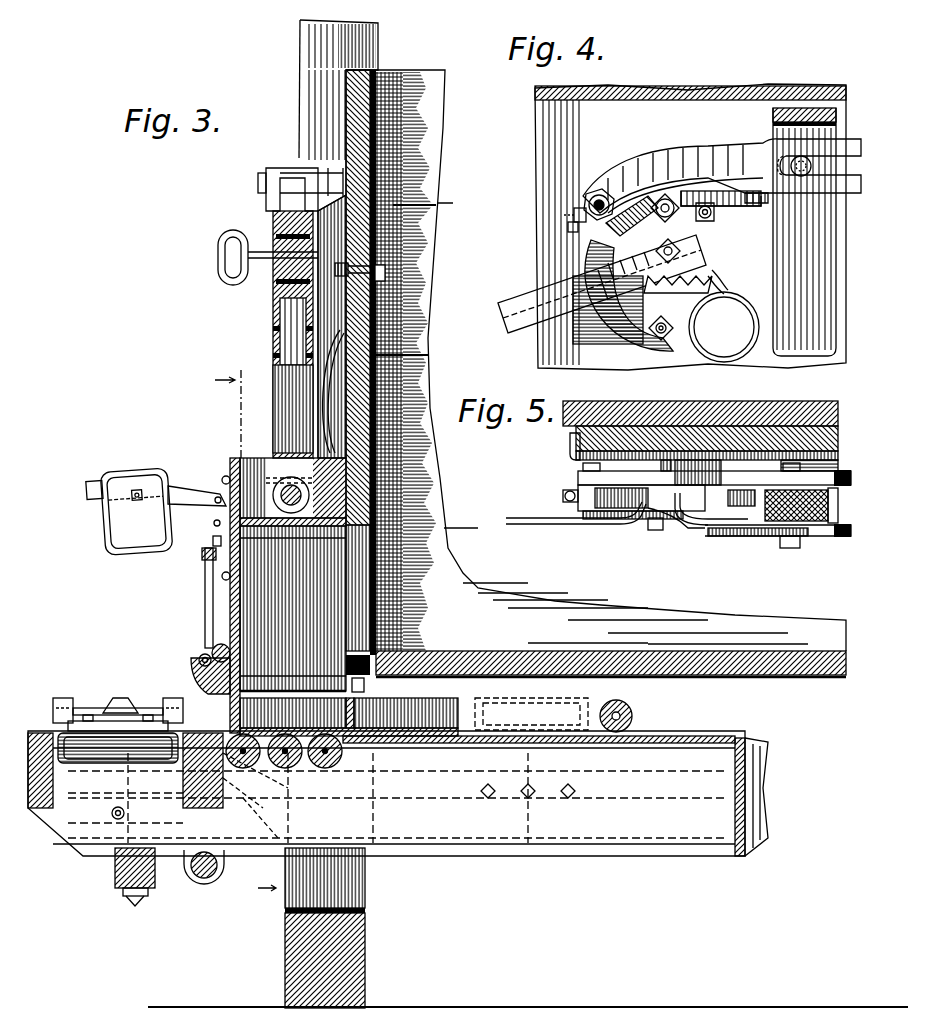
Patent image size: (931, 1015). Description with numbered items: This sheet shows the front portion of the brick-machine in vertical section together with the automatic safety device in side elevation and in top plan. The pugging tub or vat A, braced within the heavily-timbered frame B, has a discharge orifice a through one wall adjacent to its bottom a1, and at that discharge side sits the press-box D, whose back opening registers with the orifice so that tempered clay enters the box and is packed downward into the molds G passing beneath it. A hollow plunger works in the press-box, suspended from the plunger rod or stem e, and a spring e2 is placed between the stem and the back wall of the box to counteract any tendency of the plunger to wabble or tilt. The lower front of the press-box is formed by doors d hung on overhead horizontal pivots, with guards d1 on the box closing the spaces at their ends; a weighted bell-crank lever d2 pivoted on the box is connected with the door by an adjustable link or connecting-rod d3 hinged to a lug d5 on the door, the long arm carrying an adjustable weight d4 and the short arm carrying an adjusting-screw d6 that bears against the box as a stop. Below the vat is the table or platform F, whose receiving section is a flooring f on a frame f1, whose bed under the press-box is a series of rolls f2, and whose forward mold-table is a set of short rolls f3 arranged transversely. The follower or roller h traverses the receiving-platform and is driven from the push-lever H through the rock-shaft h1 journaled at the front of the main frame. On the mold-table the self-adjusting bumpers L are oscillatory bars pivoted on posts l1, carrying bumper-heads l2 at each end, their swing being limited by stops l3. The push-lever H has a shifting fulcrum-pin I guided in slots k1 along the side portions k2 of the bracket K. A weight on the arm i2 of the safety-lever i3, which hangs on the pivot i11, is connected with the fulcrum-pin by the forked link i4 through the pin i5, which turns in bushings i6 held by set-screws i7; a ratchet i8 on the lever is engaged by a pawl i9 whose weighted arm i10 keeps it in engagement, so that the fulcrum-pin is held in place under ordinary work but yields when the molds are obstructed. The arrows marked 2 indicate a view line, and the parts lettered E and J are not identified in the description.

In FIG. 3, the pugging tub or vat A is at (596, 362).
In FIG. 3, the frame B is at (338, 239).
In FIG. 3, the exit or discharge orifice a is at (358, 608).
In FIG. 3, the bottom of the tub a1 is at (611, 664).
In FIG. 3, the press-box D is at (293, 608).
In FIG. 3, the housing E is at (248, 455).
In FIG. 3, the plunger rod or stem e is at (263, 309).
In FIG. 3, the spring e2 is at (336, 290).
In FIG. 3, the molds G is at (349, 717).
In FIG. 3, the table or platform F is at (398, 785).
In FIG. 3, the flooring f is at (655, 738).
In FIG. 3, the floor-frame f1 is at (398, 798).
In FIG. 3, the rolls f2 is at (283, 758).
In FIG. 3, the short rolls f3 is at (118, 748).
In FIG. 3, the follower, push-bar, or roller h is at (620, 704).
In FIG. 3, the rock-shaft h1 is at (196, 871).
In FIG. 3, the self-adjusting bumpers L is at (100, 690).
In FIG. 3, the post or support l1 is at (116, 690).
In FIG. 3, the cushion or bumper-head l2 is at (108, 708).
In FIG. 3, the stops l3 is at (150, 698).
In FIG. 3, the doors d is at (235, 656).
In FIG. 3, the guards d1 is at (192, 648).
In FIG. 3, the weighted bell-crank lever d2 is at (196, 491).
In FIG. 3, the adjustable link or connecting-rod d3 is at (197, 583).
In FIG. 3, the adjustable weight d4 is at (129, 512).
In FIG. 3, the lug d5 is at (210, 688).
In FIG. 3, the adjusting-screw d6 is at (203, 533).
In FIG. 3, the section line 2 is at (245, 633).
In FIG. 4, the push-lever H is at (690, 227).
In FIG. 5, the push-lever H is at (706, 463).
In FIG. 4, the fulcrum-pin I is at (722, 176).
In FIG. 4, the bracket K is at (735, 198).
In FIG. 5, the bracket K is at (698, 528).
In FIG. 5, the nut J is at (788, 555).
In FIG. 5, the slots k1 is at (820, 548).
In FIG. 4, the side portions k2 is at (772, 192).
In FIG. 5, the side portions k2 is at (750, 544).
In FIG. 4, the arm i2 is at (602, 284).
In FIG. 5, the arm i2 is at (563, 518).
In FIG. 4, the safety-lever i3 is at (576, 188).
In FIG. 5, the safety-lever i3 is at (645, 515).
In FIG. 4, the link or connecting-rod i4 is at (683, 196).
In FIG. 5, the link or connecting-rod i4 is at (659, 502).
In FIG. 4, the pin i5 is at (596, 178).
In FIG. 4, the bushings i6 is at (570, 208).
In FIG. 4, the set-screws i7 is at (562, 222).
In FIG. 4, the ratchet i8 is at (724, 282).
In FIG. 4, the pawl i9 is at (642, 295).
In FIG. 4, the weighted arm i10 is at (724, 327).
In FIG. 4, the pivot i11 is at (685, 185).